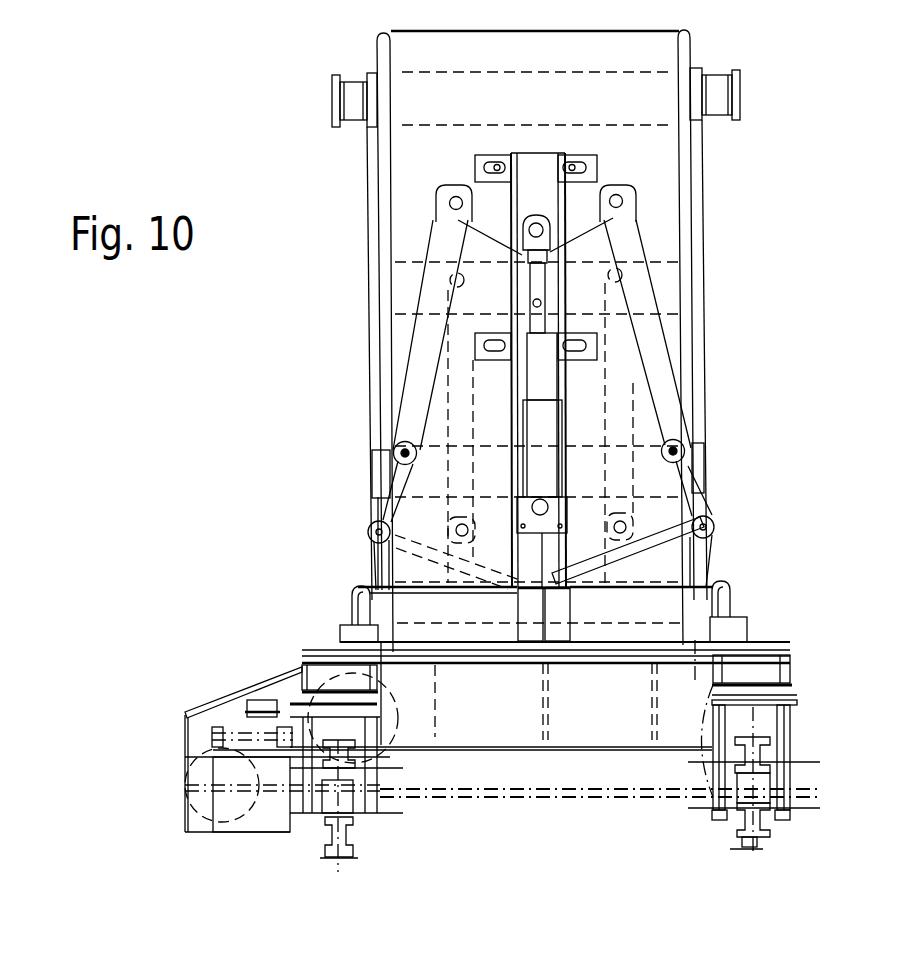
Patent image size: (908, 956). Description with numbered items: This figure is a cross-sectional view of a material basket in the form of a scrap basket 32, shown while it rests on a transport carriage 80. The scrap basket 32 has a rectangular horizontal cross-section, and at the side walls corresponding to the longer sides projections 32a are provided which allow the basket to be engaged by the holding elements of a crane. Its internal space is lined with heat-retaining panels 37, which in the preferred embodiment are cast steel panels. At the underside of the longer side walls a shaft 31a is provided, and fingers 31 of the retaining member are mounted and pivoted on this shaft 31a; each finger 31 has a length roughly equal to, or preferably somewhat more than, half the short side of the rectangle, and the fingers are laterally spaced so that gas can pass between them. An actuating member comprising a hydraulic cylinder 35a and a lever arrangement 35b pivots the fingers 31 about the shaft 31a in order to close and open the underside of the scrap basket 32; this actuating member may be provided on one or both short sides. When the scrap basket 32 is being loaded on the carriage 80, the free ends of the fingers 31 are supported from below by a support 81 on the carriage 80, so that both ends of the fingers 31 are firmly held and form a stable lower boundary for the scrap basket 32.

The fingers 31 is at (700, 565).
The shaft 31a is at (368, 534).
The scrap basket 32 is at (704, 182).
The projections 32a is at (740, 95).
The hydraulic cylinder 35a is at (533, 425).
The lever arrangement 35b is at (652, 350).
The heat-retaining panels 37 is at (389, 186).
The carriage 80 is at (793, 637).
The support 81 is at (558, 628).